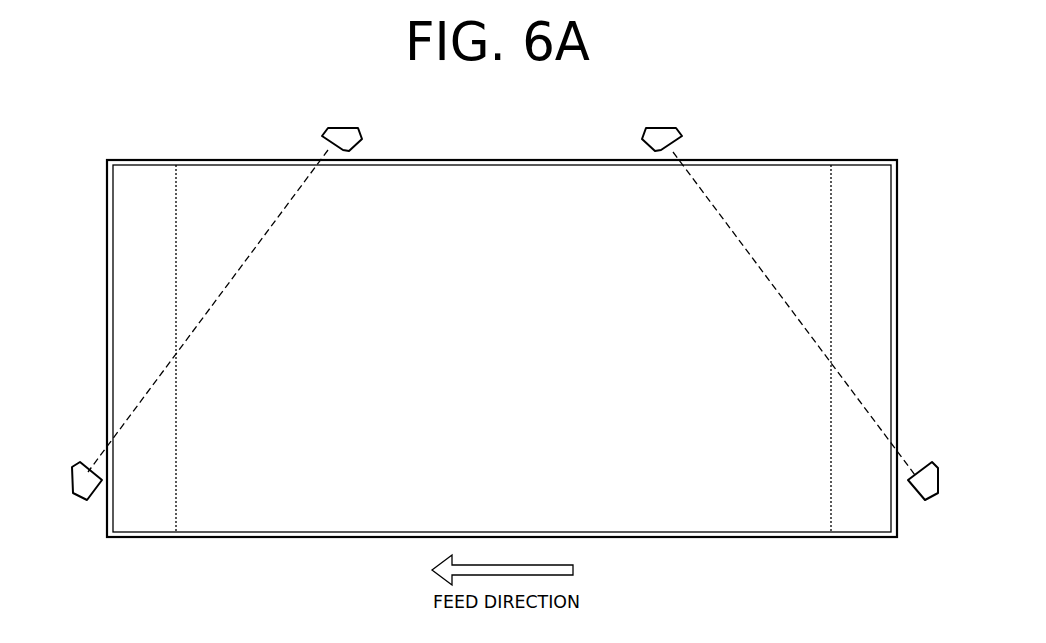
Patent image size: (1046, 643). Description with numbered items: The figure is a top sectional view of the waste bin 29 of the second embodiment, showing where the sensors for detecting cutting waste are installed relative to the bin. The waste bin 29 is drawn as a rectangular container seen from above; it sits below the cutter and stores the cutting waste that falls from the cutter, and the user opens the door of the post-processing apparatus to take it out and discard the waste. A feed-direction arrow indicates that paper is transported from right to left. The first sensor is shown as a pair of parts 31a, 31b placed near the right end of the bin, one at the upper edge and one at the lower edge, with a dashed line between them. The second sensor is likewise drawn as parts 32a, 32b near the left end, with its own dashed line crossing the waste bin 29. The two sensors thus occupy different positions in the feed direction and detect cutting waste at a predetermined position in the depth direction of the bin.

The waste bin 29 is at (232, 538).
The first sensor light emitting part 31a is at (928, 502).
The first sensor light receiving part 31b is at (666, 128).
The second sensor light emitting part 32a is at (75, 502).
The second sensor light receiving part 32b is at (347, 128).